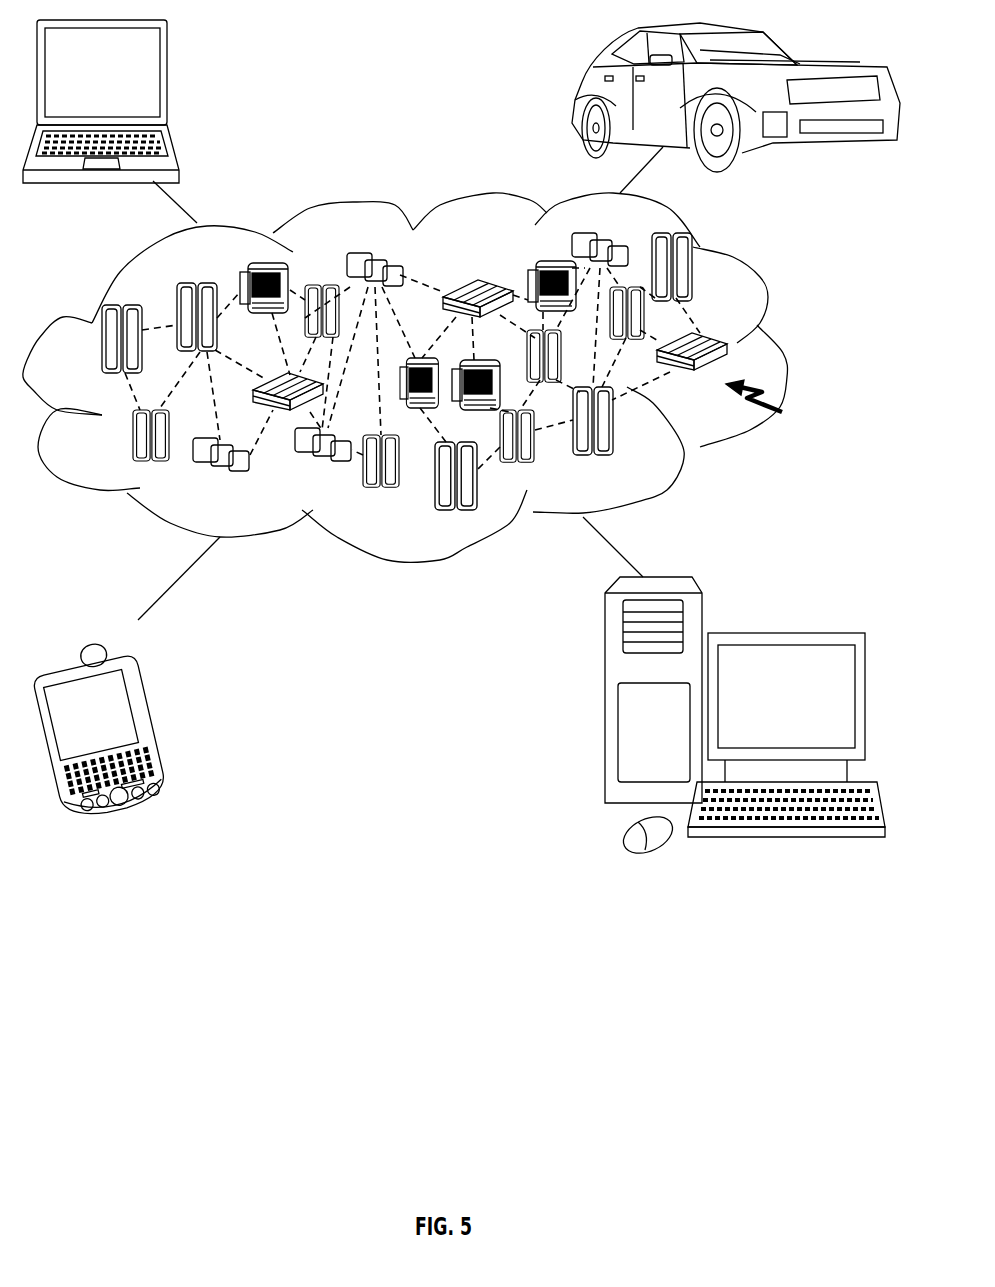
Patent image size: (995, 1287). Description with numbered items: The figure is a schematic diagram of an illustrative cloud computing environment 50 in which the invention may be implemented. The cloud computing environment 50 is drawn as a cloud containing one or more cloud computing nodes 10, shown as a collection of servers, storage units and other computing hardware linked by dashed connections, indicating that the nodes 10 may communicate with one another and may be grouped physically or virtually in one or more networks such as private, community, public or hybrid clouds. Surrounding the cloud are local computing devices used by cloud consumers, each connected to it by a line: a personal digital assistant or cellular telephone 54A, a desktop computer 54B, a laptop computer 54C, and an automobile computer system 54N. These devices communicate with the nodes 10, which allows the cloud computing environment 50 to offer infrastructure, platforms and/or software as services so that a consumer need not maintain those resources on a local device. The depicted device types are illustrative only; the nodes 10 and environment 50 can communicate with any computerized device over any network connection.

The cloud computing node 10 is at (772, 408).
The cloud computing environment 50 is at (786, 348).
The personal digital assistant or cellular telephone 54A is at (157, 722).
The desktop computer 54B is at (782, 633).
The laptop computer 54C is at (166, 80).
The automobile computer system 54N is at (582, 96).